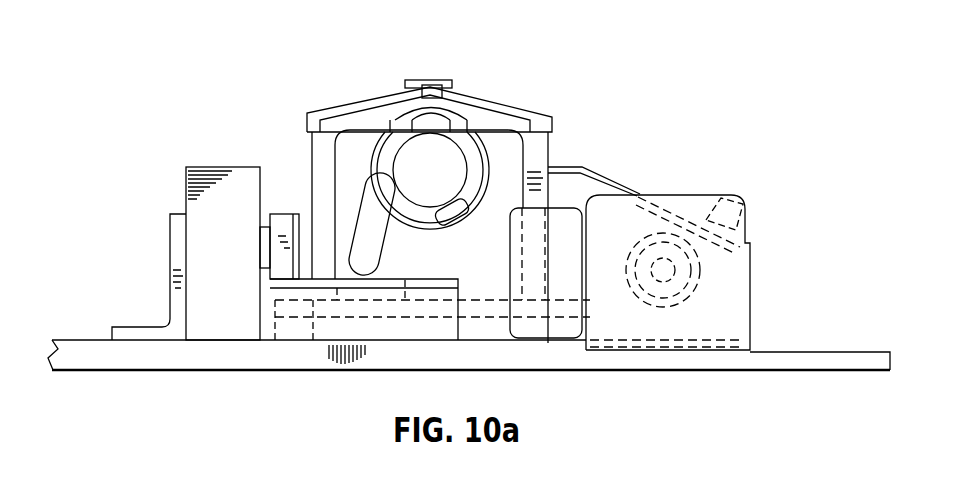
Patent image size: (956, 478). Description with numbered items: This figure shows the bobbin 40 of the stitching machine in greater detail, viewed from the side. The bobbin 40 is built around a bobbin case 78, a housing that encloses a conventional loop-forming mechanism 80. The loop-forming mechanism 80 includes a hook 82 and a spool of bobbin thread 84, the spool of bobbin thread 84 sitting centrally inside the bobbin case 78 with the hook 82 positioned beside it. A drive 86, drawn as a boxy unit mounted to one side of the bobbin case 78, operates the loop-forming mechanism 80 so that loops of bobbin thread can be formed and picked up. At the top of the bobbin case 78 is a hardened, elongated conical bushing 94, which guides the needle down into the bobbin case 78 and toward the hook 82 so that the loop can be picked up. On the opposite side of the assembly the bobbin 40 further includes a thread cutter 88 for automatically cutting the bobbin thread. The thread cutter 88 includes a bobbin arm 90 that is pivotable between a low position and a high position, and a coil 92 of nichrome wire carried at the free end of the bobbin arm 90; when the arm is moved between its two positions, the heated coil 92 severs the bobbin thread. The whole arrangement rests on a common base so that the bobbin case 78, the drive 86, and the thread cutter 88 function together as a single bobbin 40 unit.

The bobbin 40 is at (678, 89).
The bobbin case 78 is at (548, 158).
The loop-forming mechanism 80 is at (354, 160).
The hook 82 is at (465, 234).
The spool of bobbin thread 84 is at (444, 173).
The drive 86 is at (700, 195).
The thread cutter 88 is at (196, 161).
The bobbin arm 90 is at (398, 328).
The coil of nichrome wire 92 is at (185, 187).
The conical bushing 94 is at (433, 92).